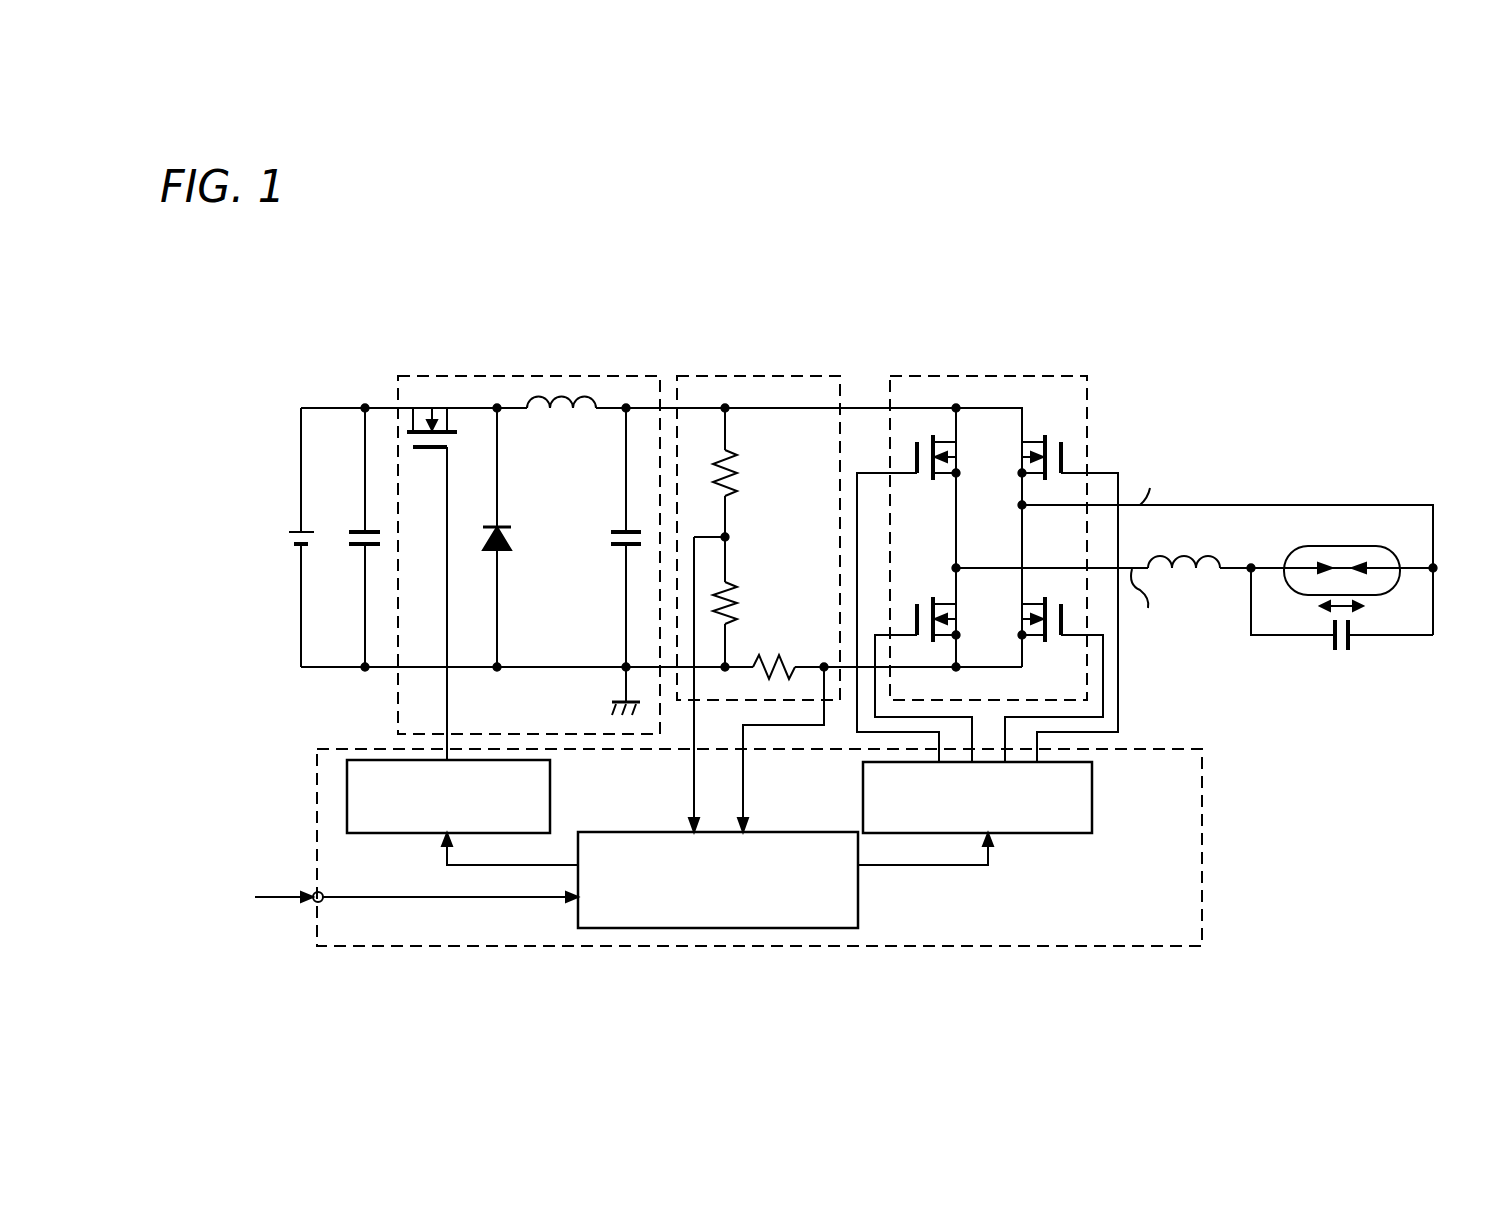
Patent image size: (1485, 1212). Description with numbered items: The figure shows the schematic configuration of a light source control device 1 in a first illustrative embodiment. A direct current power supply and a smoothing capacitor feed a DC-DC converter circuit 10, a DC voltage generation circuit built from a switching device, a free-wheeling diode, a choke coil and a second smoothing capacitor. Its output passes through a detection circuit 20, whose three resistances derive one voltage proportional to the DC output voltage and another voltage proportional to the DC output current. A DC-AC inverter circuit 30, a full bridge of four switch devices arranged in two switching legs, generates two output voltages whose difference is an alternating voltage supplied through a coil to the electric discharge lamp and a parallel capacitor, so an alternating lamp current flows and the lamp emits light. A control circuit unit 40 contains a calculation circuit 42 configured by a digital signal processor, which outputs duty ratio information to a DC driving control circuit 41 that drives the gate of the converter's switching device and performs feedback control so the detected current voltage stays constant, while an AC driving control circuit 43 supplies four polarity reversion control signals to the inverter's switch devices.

The light source control device 1 is at (325, 333).
The DC-DC converter circuit 10 is at (400, 376).
The detection circuit 20 is at (840, 396).
The DC-AC inverter circuit 30 is at (1087, 412).
The control circuit unit 40 is at (1202, 768).
The DC driving control circuit 41 is at (420, 833).
The calculation circuit 42 is at (858, 915).
The AC driving control circuit 43 is at (1092, 820).